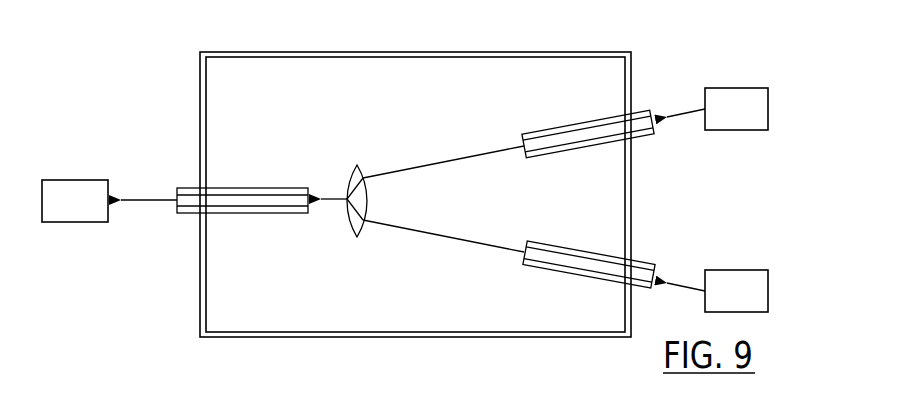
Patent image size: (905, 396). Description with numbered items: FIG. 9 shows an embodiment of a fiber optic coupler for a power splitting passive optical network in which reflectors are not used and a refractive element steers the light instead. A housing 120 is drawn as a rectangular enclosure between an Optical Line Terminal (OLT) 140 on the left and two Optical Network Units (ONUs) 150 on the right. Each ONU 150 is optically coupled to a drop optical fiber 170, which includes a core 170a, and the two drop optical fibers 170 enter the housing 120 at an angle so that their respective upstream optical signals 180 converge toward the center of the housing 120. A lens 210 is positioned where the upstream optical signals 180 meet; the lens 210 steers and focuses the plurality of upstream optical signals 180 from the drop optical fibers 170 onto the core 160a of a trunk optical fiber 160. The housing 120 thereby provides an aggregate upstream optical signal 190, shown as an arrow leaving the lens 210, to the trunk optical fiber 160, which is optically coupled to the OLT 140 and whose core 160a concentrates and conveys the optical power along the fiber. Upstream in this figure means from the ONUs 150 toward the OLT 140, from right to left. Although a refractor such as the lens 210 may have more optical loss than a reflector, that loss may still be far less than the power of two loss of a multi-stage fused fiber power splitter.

The housing 120 is at (462, 52).
The Optical Line Terminal (OLT) 140 is at (71, 180).
The Optical Network Unit (ONU) 150 is at (735, 87).
The trunk optical fiber 160 is at (228, 188).
The core 160a is at (258, 188).
The drop optical fiber 170 is at (583, 121).
The core 170a is at (550, 130).
The upstream optical signal 180 is at (447, 161).
The aggregate upstream optical signal 190 is at (338, 196).
The lens 210 is at (362, 168).